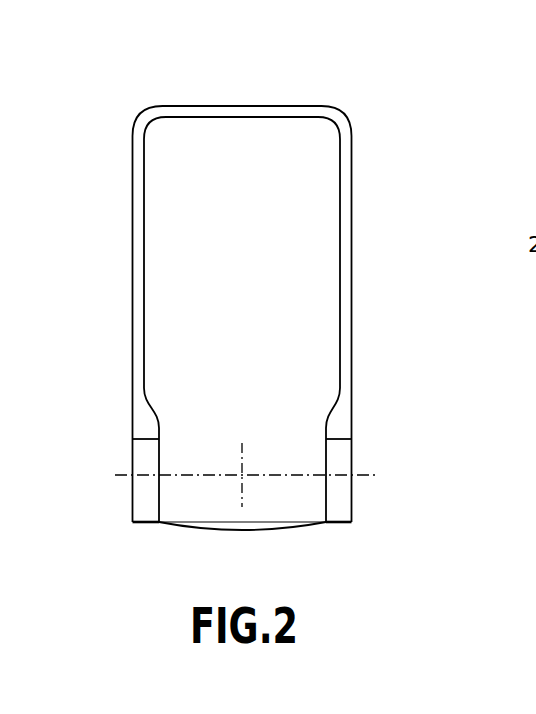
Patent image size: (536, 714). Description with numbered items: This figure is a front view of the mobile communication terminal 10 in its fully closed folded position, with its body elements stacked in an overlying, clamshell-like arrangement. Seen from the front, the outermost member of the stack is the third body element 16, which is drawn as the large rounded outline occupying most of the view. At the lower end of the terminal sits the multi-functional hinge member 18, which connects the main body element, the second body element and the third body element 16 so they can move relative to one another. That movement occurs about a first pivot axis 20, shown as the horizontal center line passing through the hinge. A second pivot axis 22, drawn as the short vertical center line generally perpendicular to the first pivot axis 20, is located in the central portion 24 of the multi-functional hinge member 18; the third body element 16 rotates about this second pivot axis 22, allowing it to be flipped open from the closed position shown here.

The mobile communication terminal 10 is at (369, 36).
The third body element 16 is at (286, 157).
The multi-functional hinge member 18 is at (106, 490).
The first pivot axis 20 is at (363, 473).
The second pivot axis 22 is at (242, 476).
The central portion 24 is at (258, 502).